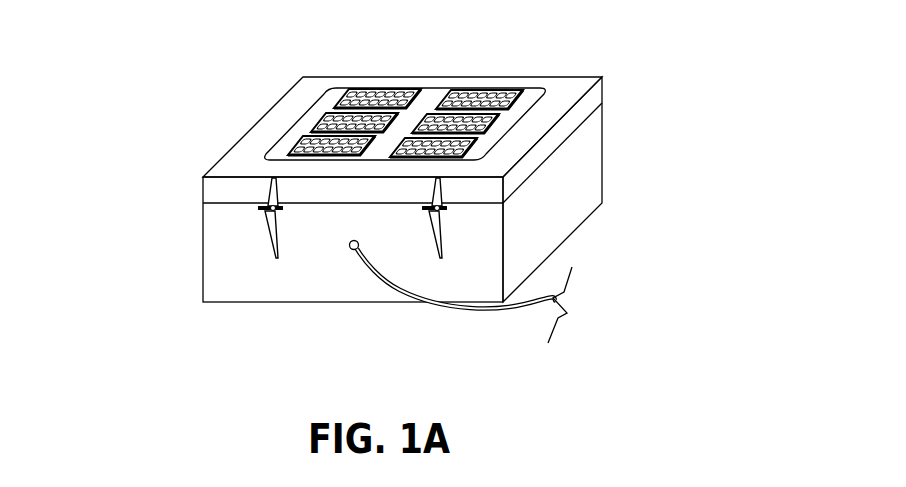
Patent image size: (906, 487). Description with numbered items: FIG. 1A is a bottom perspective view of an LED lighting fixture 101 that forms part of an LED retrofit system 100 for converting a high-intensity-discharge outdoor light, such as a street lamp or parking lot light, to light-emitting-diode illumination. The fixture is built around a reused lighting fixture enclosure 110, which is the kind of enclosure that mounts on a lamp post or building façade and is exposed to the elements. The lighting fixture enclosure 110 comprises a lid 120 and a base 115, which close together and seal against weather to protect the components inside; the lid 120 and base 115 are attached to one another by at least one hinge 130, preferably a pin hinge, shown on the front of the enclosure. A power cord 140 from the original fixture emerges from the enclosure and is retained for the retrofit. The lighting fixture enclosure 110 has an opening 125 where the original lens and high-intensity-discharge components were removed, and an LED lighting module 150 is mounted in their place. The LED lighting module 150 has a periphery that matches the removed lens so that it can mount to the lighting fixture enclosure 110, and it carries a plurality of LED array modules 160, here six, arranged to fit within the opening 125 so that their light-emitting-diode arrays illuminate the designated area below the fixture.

The LED retrofit system 100 is at (146, 86).
The LED lighting fixture 101 is at (123, 108).
The lighting fixture enclosure 110 is at (669, 89).
The base 115 is at (604, 142).
The lid 120 is at (606, 91).
The opening 125 is at (308, 110).
The hinge 130 is at (263, 223).
The power cord 140 is at (372, 270).
The LED lighting module 150 is at (550, 41).
The LED array module 160 is at (444, 93).